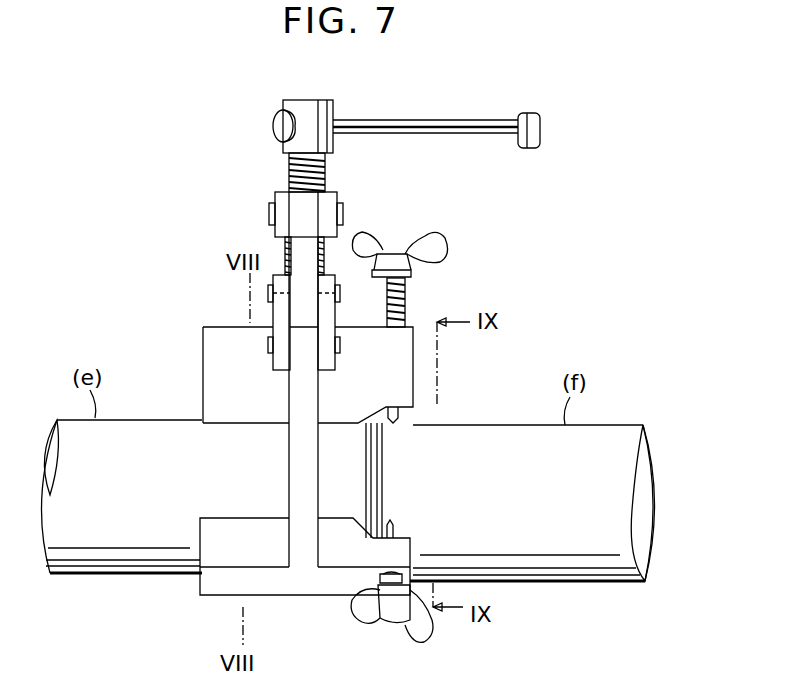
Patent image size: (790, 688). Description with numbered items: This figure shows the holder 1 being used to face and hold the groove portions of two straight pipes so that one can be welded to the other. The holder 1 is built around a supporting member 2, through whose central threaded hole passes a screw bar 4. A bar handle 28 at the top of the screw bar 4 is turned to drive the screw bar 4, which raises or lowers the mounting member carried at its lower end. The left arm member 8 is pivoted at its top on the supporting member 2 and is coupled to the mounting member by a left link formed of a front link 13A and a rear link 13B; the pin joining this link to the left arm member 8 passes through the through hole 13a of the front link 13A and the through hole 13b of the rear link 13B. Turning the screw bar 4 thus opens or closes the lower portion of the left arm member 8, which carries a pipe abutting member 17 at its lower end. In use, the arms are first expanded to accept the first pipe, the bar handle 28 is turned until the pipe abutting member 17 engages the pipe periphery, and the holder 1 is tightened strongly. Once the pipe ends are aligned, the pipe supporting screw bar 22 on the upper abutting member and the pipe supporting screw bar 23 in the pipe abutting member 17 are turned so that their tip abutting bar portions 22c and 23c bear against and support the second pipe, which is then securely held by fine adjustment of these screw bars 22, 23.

The holder 1 is at (267, 117).
The supporting member 2 is at (328, 197).
The screw bar 4 is at (288, 172).
The left arm member 8 is at (297, 393).
The front link 13A is at (328, 275).
The rear link 13B is at (280, 275).
The through hole 13a is at (323, 293).
The through hole 13b is at (283, 293).
The pipe abutting member 17 is at (293, 587).
The pipe supporting screw bar 22 is at (407, 296).
The abutting bar portion 22c is at (400, 420).
The pipe supporting screw bar 23 is at (375, 583).
The abutting bar portion 23c is at (396, 528).
The bar handle 28 is at (428, 120).